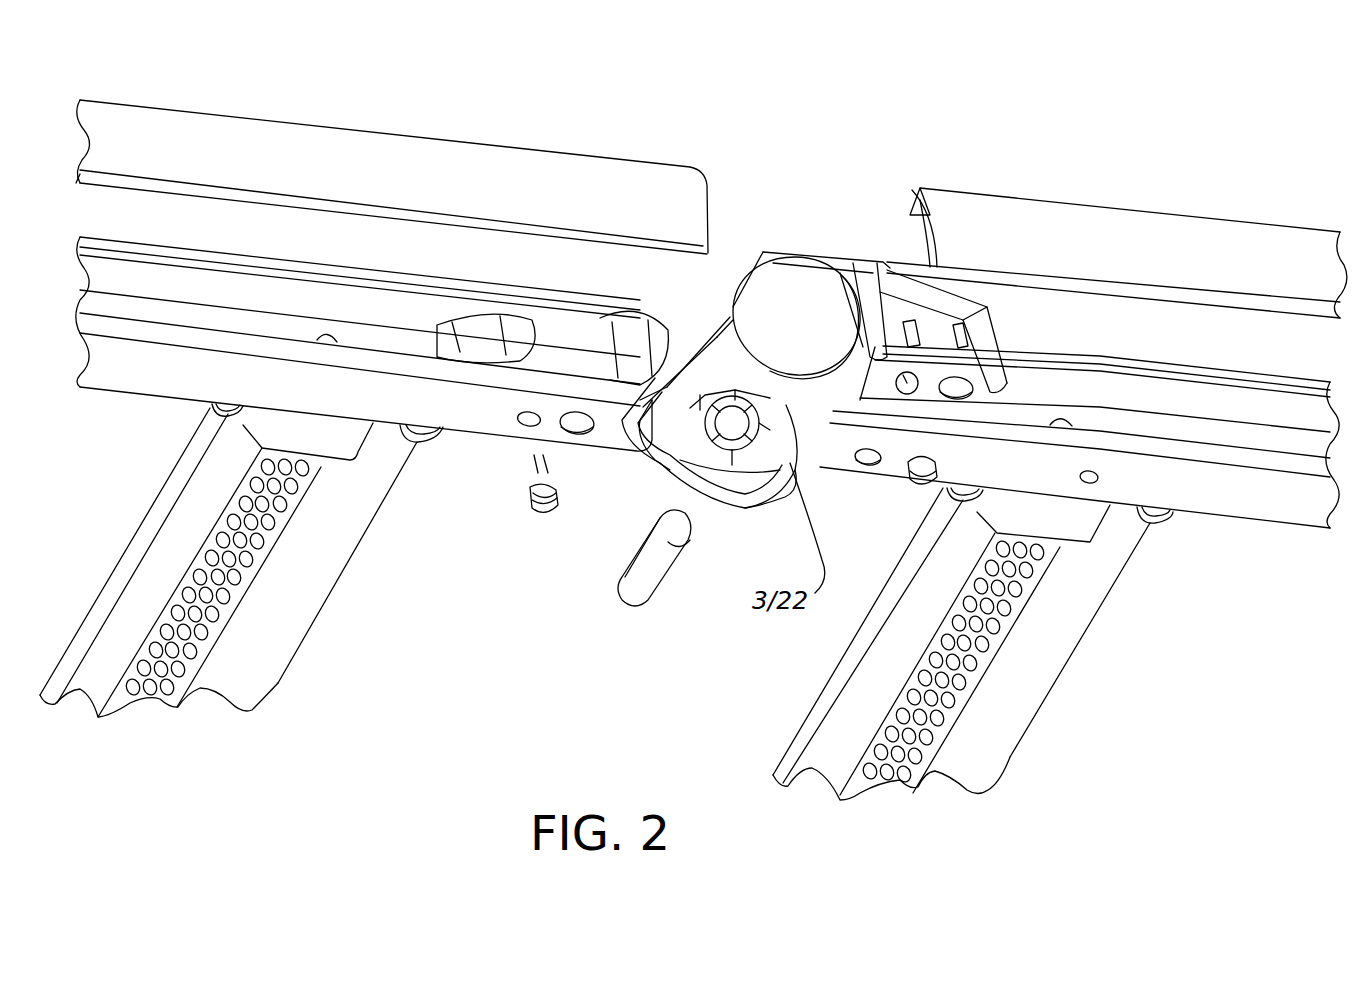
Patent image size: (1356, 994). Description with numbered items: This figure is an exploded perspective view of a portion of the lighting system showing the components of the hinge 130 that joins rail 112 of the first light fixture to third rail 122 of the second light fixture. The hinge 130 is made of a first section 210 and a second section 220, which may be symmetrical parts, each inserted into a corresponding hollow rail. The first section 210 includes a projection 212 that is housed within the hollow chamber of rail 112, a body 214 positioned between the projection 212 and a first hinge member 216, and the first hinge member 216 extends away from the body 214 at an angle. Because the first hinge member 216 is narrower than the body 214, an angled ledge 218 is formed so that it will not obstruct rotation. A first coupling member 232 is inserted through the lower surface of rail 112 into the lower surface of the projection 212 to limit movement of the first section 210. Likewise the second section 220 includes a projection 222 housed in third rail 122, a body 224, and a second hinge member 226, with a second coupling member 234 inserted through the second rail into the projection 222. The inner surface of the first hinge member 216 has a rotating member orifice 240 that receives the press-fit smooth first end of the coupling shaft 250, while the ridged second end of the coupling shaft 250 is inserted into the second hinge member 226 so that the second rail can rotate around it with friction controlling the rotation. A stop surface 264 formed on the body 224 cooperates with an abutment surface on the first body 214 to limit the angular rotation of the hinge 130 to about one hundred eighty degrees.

The hinge 130 is at (350, 64).
The rail 112 is at (437, 352).
The third rail 122 is at (1277, 440).
The first section 210 is at (680, 305).
The projection 212 is at (515, 325).
The body 214 is at (727, 262).
The first hinge member 216 is at (728, 497).
The angled ledge 218 is at (653, 467).
The second section 220 is at (897, 260).
The projection 222 is at (1000, 367).
The body 224 is at (863, 263).
The second hinge member 226 is at (810, 297).
The first coupling member 232 is at (543, 520).
The second coupling member 234 is at (927, 490).
The rotating member orifice 240 is at (767, 463).
The coupling shaft 250 is at (640, 587).
The stop surface 264 is at (690, 333).